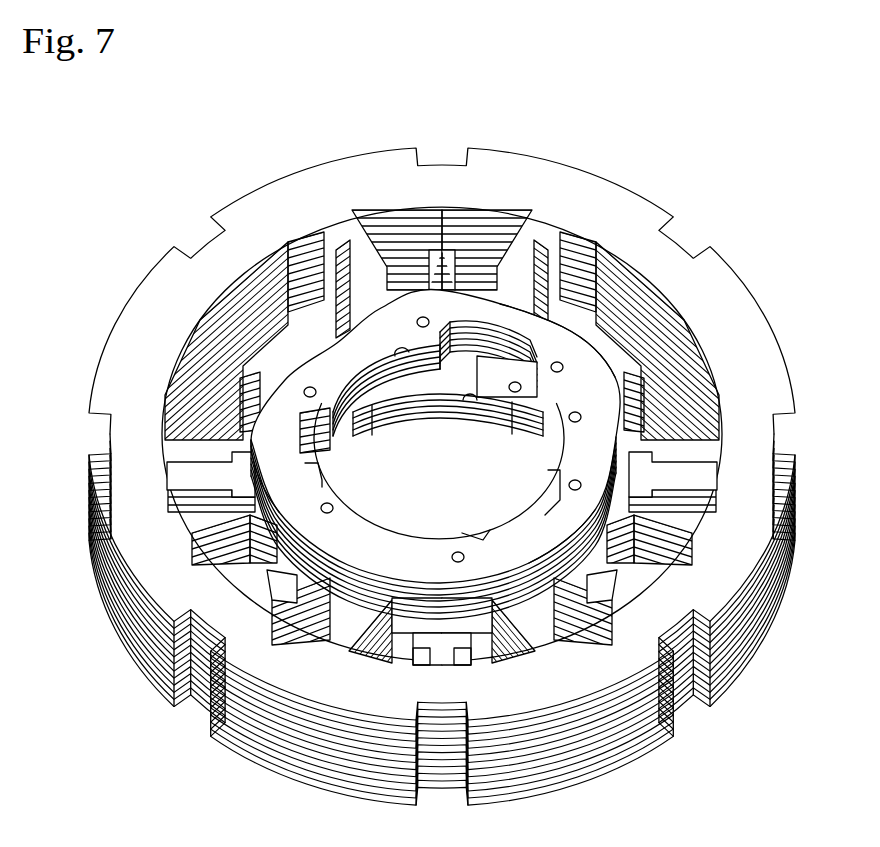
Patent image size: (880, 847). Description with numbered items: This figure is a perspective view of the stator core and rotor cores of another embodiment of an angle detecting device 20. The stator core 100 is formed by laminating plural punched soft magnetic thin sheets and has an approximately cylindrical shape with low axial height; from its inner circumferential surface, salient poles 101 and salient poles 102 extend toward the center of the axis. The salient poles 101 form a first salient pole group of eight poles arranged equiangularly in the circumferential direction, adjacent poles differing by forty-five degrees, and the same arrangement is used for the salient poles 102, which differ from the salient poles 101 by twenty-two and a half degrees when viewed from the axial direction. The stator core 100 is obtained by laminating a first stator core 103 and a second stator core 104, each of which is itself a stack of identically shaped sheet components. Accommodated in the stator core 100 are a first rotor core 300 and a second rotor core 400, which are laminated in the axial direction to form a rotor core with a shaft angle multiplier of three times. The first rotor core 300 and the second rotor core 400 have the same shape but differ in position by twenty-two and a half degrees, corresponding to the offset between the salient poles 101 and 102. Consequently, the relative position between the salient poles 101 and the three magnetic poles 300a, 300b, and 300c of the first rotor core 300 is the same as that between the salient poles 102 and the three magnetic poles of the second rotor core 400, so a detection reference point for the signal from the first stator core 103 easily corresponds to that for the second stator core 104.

The angle detecting device 20 is at (650, 177).
The stator core 100 is at (568, 193).
The salient poles 101 is at (528, 265).
The salient poles 102 is at (266, 330).
The first stator core 103 is at (70, 456).
The second stator core 104 is at (70, 498).
The first rotor core 300 is at (411, 312).
The magnetic pole 300a is at (533, 333).
The magnetic pole 300b is at (542, 555).
The magnetic pole 300c is at (290, 443).
The second rotor core 400 is at (433, 419).